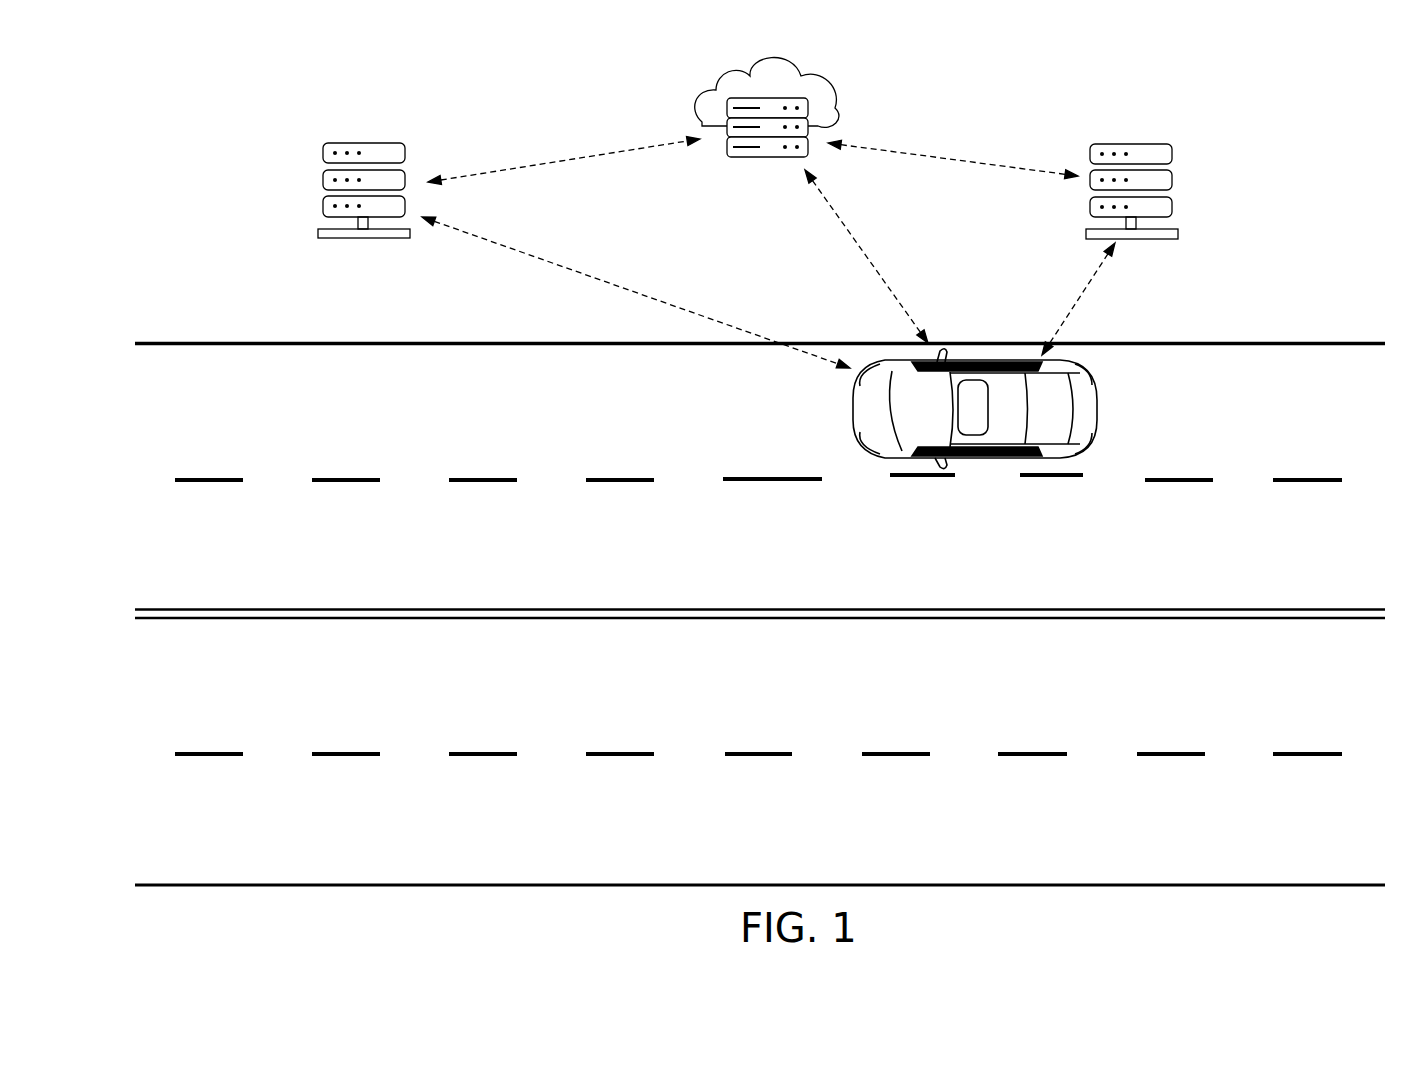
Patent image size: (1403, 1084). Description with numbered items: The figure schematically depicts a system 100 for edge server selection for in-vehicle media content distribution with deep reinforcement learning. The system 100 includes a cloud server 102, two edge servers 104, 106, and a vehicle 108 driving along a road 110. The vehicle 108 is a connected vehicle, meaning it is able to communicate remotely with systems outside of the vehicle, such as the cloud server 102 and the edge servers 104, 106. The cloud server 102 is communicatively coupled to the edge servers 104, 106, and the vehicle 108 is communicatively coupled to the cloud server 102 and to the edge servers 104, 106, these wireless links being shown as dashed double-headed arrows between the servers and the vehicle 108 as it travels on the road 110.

The system 100 is at (174, 190).
The cloud server 102 is at (836, 104).
The edge server 104 is at (1172, 154).
The edge server 106 is at (323, 152).
The vehicle 108 is at (1087, 404).
The road 110 is at (248, 337).